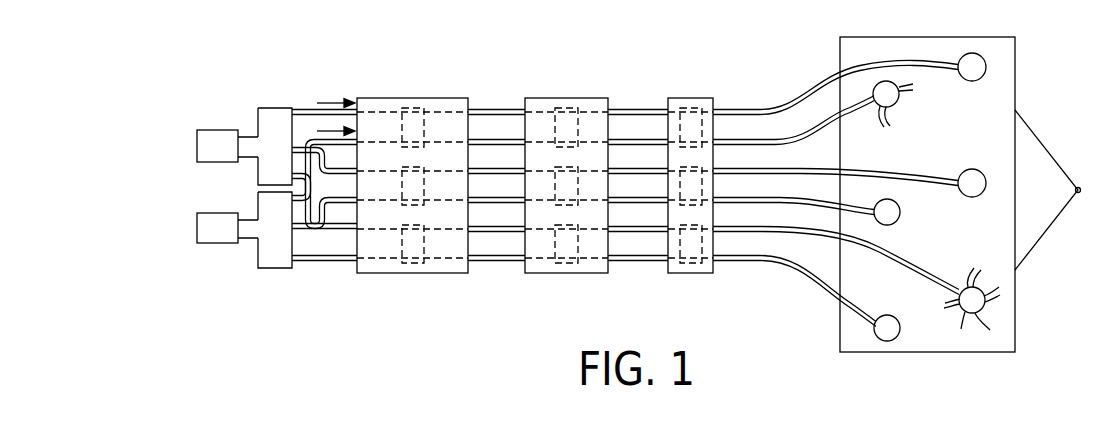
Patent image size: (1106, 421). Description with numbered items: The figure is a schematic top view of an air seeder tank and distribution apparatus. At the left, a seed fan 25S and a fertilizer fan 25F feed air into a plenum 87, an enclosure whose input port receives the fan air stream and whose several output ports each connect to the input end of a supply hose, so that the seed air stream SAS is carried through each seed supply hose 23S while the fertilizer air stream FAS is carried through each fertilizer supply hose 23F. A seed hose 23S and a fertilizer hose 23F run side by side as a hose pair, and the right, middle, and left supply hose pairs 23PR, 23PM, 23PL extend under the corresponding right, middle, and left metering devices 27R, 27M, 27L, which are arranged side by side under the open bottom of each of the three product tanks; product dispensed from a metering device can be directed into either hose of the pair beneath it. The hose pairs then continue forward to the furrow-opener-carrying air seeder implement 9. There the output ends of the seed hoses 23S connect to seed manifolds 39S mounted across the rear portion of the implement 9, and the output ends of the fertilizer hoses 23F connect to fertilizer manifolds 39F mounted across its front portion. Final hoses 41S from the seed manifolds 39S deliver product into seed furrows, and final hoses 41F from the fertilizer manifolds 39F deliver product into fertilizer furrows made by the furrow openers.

The air seeder implement 9 is at (1017, 55).
The fertilizer supply hose 23F is at (343, 231).
The seed supply hose 23S is at (317, 261).
The left supply hose pair 23PL is at (642, 138).
The middle supply hose pair 23PM is at (655, 174).
The right supply hose pair 23PR is at (633, 232).
The fertilizer fan 25F is at (212, 162).
The seed fan 25S is at (212, 243).
The left metering device 27L is at (425, 128).
The middle metering device 27M is at (425, 188).
The right metering device 27R is at (424, 245).
The fertilizer manifold 39F is at (985, 303).
The seed manifold 39S is at (900, 336).
The final hoses (fertilizer) 41F is at (978, 318).
The final hoses (seed) 41S is at (897, 118).
The plenum 87 is at (275, 268).
The fertilizer air stream FAS is at (330, 100).
The seed air stream SAS is at (320, 129).